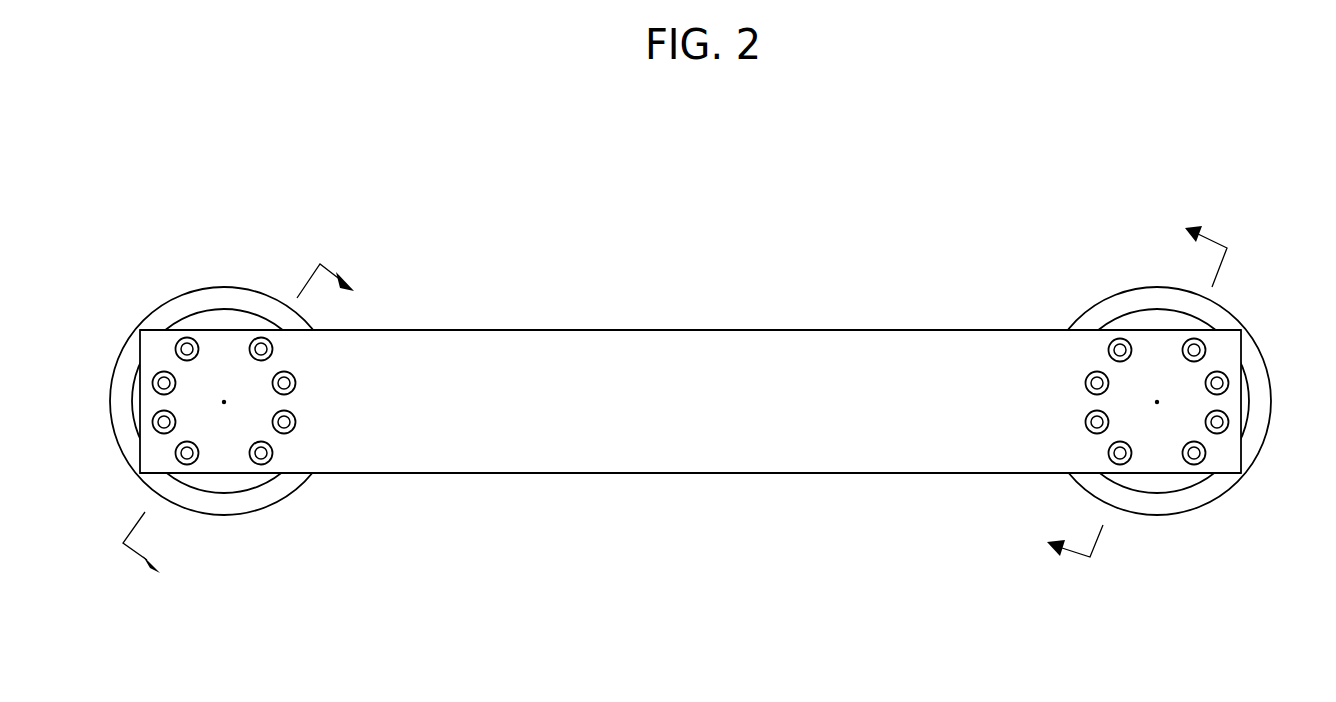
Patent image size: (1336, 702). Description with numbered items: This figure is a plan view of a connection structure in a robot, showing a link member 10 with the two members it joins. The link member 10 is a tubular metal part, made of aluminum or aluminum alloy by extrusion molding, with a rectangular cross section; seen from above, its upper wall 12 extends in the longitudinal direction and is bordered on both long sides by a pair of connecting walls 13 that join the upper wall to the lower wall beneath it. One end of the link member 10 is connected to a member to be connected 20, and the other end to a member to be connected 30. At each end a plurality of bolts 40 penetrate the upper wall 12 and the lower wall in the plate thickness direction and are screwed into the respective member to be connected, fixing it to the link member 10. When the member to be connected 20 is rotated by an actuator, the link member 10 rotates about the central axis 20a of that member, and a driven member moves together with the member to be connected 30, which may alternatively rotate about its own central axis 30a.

The link member 10 is at (806, 318).
The upper wall 12 is at (684, 349).
The connecting walls 13 is at (559, 330).
The member to be connected 20 is at (190, 324).
The central axis 20a is at (224, 406).
The member to be connected 30 is at (1154, 287).
The central axis 30a is at (1157, 406).
The bolts 40 is at (195, 339).